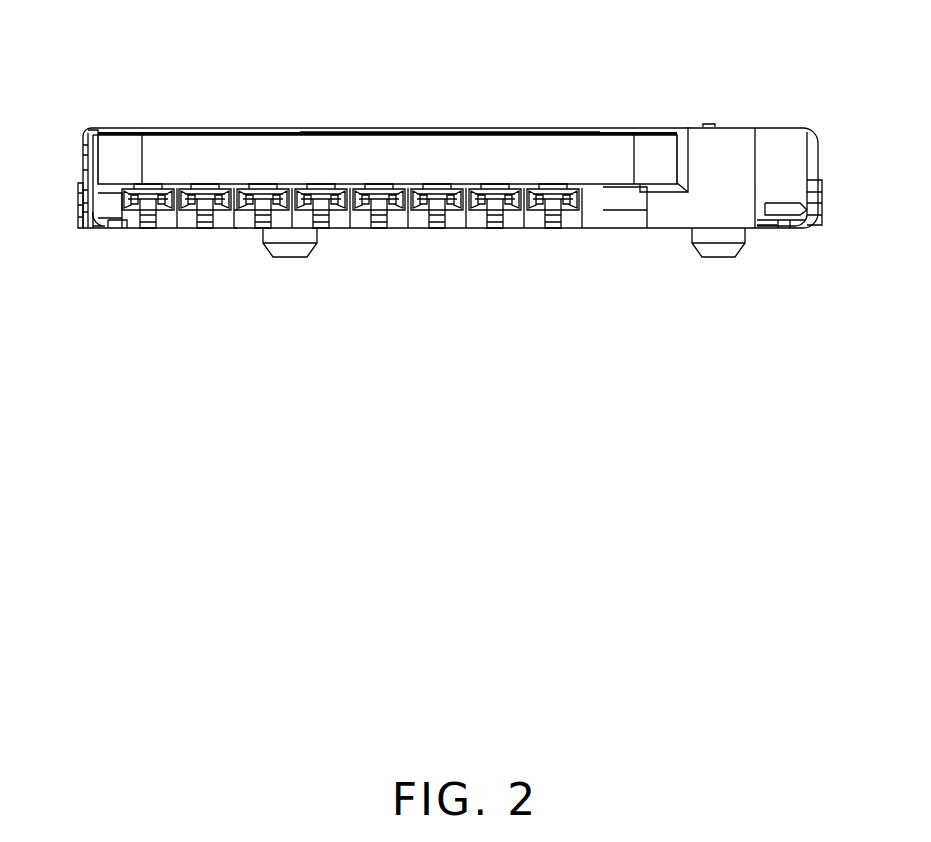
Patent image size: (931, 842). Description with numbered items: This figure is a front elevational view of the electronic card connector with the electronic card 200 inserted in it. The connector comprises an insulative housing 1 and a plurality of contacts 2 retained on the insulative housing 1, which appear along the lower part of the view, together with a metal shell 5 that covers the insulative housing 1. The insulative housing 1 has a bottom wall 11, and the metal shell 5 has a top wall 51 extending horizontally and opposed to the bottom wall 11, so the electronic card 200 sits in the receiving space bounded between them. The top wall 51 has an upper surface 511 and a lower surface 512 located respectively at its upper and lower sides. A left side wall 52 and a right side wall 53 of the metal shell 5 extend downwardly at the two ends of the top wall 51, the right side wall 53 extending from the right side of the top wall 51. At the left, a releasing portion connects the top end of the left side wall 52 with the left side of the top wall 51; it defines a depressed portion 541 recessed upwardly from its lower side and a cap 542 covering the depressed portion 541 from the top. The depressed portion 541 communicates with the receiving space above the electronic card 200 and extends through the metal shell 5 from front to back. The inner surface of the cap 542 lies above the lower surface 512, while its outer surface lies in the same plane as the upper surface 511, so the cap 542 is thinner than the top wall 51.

The insulative housing 1 is at (675, 208).
The contacts 2 is at (438, 218).
The bottom wall 11 is at (247, 218).
The metal shell 5 is at (393, 112).
The top wall 51 is at (198, 133).
The upper surface 511 is at (358, 131).
The lower surface 512 is at (484, 131).
The electronic card 200 is at (564, 157).
The left side wall 52 is at (82, 150).
The right side wall 53 is at (815, 153).
The depressed portion 541 is at (97, 130).
The cap 542 is at (98, 131).